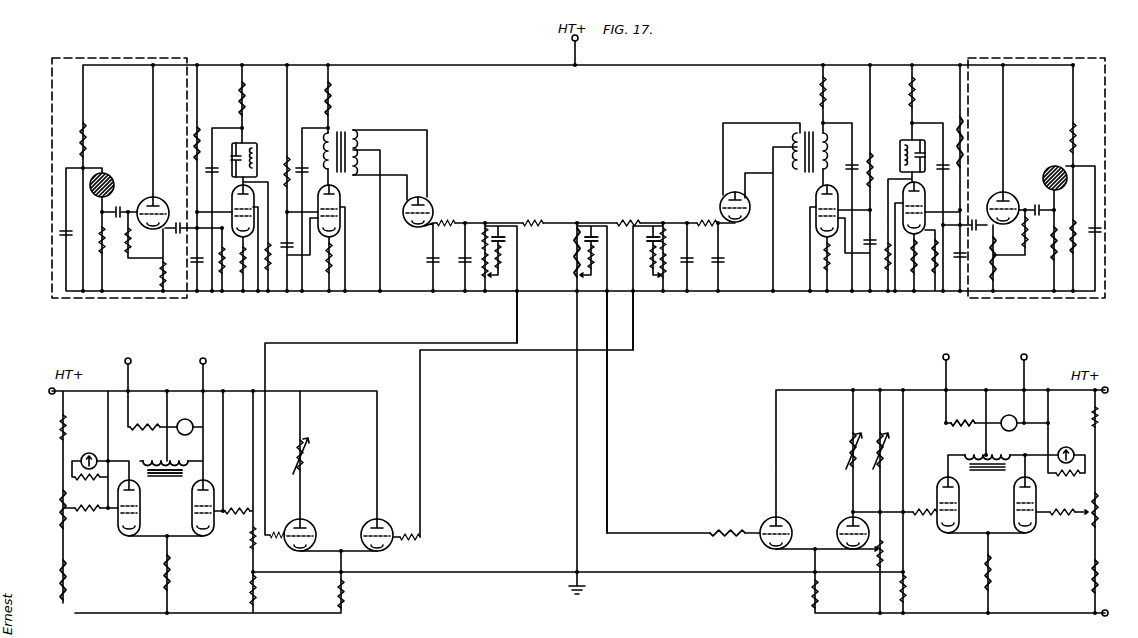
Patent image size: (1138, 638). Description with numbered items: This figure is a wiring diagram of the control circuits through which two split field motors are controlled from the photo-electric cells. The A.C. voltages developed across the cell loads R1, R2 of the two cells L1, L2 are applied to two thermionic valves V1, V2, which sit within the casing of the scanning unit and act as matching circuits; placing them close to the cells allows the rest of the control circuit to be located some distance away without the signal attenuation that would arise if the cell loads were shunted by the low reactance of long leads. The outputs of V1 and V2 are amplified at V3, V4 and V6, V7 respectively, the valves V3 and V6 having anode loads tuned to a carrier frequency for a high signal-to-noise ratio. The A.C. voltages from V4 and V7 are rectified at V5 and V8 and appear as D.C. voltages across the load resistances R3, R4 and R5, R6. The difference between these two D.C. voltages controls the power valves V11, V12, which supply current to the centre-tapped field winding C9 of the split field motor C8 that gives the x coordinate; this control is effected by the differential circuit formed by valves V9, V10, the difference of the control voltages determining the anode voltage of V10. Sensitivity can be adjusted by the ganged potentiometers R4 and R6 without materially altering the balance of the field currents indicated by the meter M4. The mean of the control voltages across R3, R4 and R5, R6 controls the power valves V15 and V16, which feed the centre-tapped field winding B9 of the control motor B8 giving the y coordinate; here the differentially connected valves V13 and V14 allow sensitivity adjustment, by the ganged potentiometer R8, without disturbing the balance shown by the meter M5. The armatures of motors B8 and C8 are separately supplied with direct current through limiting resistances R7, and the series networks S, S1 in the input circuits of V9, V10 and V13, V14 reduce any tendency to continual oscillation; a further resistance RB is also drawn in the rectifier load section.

The photo-electric cell L1 is at (107, 178).
The photo-electric cell L2 is at (1047, 173).
The thermionic valve V1 is at (158, 201).
The thermionic valve V2 is at (990, 198).
The amplifying valve V3 is at (234, 211).
The amplifying valve V4 is at (341, 197).
The rectifier valve V5 is at (435, 203).
The amplifying valve V6 is at (927, 190).
The amplifying valve V7 is at (819, 189).
The rectifier valve V8 is at (720, 203).
The differential valve V9 is at (392, 549).
The differential valve V10 is at (297, 546).
The power valve V11 is at (213, 538).
The power valve V12 is at (118, 538).
The differential valve V13 is at (775, 545).
The differential valve V14 is at (853, 545).
The power valve V15 is at (941, 516).
The power valve V16 is at (1030, 535).
The cell load R1 is at (112, 240).
The cell load R2 is at (1036, 232).
The load resistance R3 is at (483, 243).
The ganged potentiometer R4 is at (483, 277).
The load resistance R5 is at (668, 244).
The ganged potentiometer R6 is at (668, 277).
The limiting resistance R7 is at (162, 419).
The ganged potentiometer R8 is at (889, 558).
The resistor RB is at (577, 272).
The series network S is at (514, 238).
The series network S1 is at (510, 262).
The split field motor C8 is at (190, 434).
The motor field winding C9 is at (167, 456).
The control motor B8 is at (1048, 423).
The motor field winding B9 is at (1010, 455).
The meter M4 is at (90, 452).
The meter M5 is at (1073, 452).